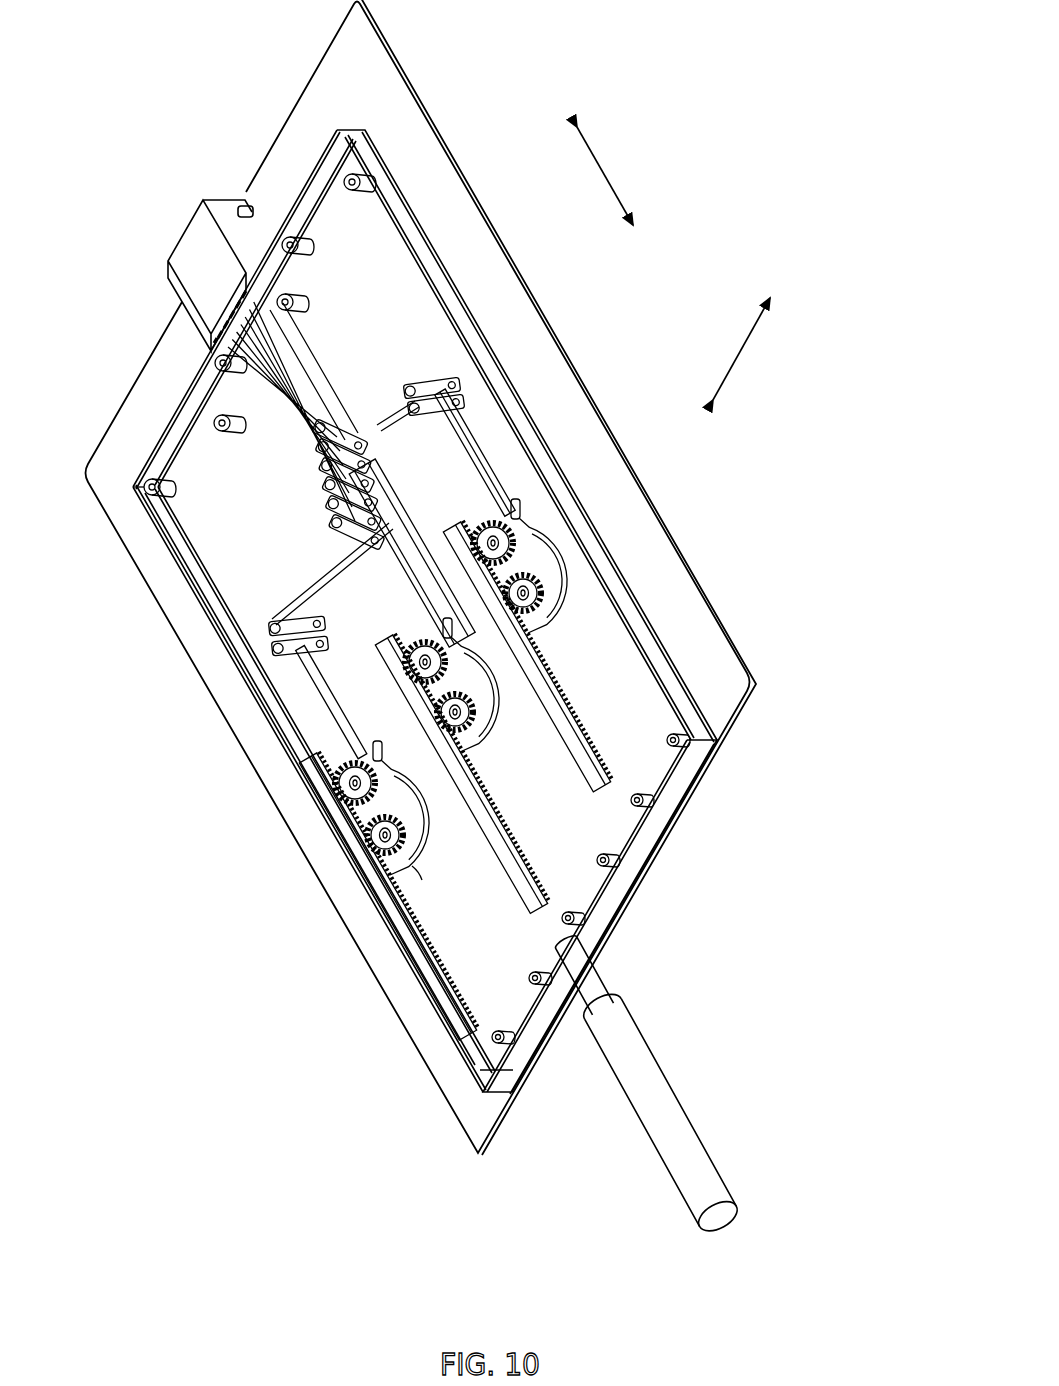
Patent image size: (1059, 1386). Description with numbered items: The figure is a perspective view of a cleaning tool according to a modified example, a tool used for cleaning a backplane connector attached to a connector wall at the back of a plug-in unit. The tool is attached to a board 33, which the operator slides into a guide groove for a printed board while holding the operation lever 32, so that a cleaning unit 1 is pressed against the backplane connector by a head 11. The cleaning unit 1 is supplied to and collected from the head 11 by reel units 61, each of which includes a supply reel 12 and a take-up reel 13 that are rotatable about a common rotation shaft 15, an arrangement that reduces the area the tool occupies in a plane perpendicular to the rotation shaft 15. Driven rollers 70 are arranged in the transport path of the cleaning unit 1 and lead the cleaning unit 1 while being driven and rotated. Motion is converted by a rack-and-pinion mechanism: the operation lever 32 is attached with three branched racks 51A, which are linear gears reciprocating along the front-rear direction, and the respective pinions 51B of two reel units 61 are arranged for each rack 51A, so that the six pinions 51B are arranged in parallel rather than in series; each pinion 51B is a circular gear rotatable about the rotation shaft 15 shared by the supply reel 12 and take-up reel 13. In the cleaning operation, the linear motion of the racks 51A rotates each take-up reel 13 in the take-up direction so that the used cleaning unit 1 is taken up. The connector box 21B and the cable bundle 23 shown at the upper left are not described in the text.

The head 11 is at (170, 213).
The connector box 21B is at (193, 268).
The cable bundle 23 is at (240, 352).
The cleaning unit 1 is at (317, 378).
The driven roller 70 is at (420, 383).
The reel unit 61 is at (485, 505).
The rack 51A is at (613, 777).
The pinion 51B is at (377, 837).
The rotation shaft 15 is at (340, 810).
The take-up reel 13 is at (400, 860).
The supply reel 12 is at (417, 870).
The board 33 is at (425, 1037).
The operation lever 32 is at (667, 1077).